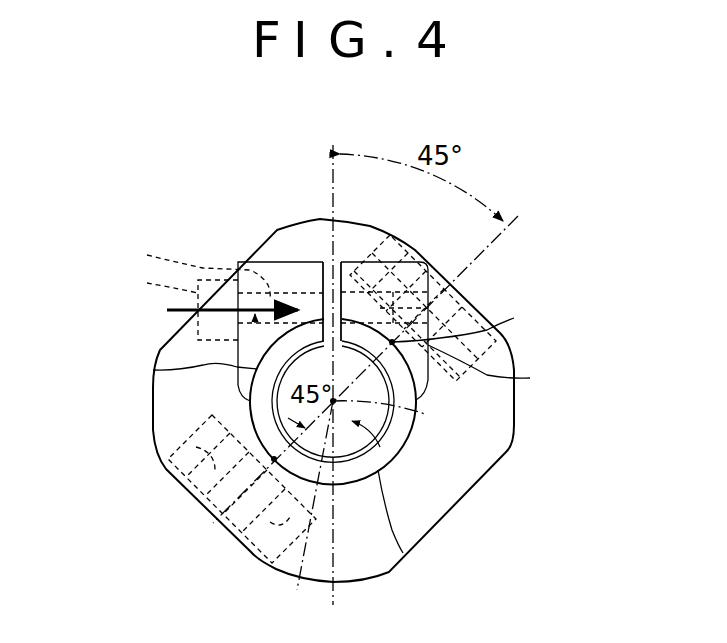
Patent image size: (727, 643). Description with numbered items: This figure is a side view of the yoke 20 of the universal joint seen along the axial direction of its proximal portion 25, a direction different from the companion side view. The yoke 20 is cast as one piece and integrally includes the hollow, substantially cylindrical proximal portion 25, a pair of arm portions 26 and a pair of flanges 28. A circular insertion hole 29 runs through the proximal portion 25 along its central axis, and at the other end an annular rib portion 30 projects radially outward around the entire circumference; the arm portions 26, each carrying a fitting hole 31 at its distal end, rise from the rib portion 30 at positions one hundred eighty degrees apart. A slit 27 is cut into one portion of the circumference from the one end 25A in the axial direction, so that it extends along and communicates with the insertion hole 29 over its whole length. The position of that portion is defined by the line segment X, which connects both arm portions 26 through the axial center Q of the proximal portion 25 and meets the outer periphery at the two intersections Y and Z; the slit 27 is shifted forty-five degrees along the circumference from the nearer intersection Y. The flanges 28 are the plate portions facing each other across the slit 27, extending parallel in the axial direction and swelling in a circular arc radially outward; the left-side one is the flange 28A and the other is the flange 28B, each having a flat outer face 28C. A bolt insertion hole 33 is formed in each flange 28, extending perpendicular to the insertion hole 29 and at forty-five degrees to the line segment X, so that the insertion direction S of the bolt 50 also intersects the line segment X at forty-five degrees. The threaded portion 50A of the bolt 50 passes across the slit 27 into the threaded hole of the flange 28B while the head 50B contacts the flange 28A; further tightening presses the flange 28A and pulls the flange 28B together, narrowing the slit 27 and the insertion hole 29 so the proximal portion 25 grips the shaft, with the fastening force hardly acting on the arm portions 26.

The yoke 20 is at (456, 514).
The proximal portion 25 is at (357, 473).
The one end 25A is at (403, 433).
The arm portions 26 is at (408, 238).
The slit 27 is at (338, 260).
The flanges 28 is at (316, 274).
The flange 28A is at (288, 280).
The flange 28B is at (333, 280).
The face 28C is at (153, 370).
The insertion hole 29 is at (404, 534).
The rib portion 30 is at (488, 452).
The fitting hole 31 is at (261, 546).
The bolt insertion hole 33 is at (433, 300).
The bolt 50 is at (156, 291).
The threaded portion 50A is at (181, 271).
The head 50B is at (165, 308).
The insertion direction S is at (173, 311).
The line segment X is at (425, 414).
The intersection Y is at (524, 324).
The intersection Z is at (268, 508).
The axial center Q is at (297, 611).